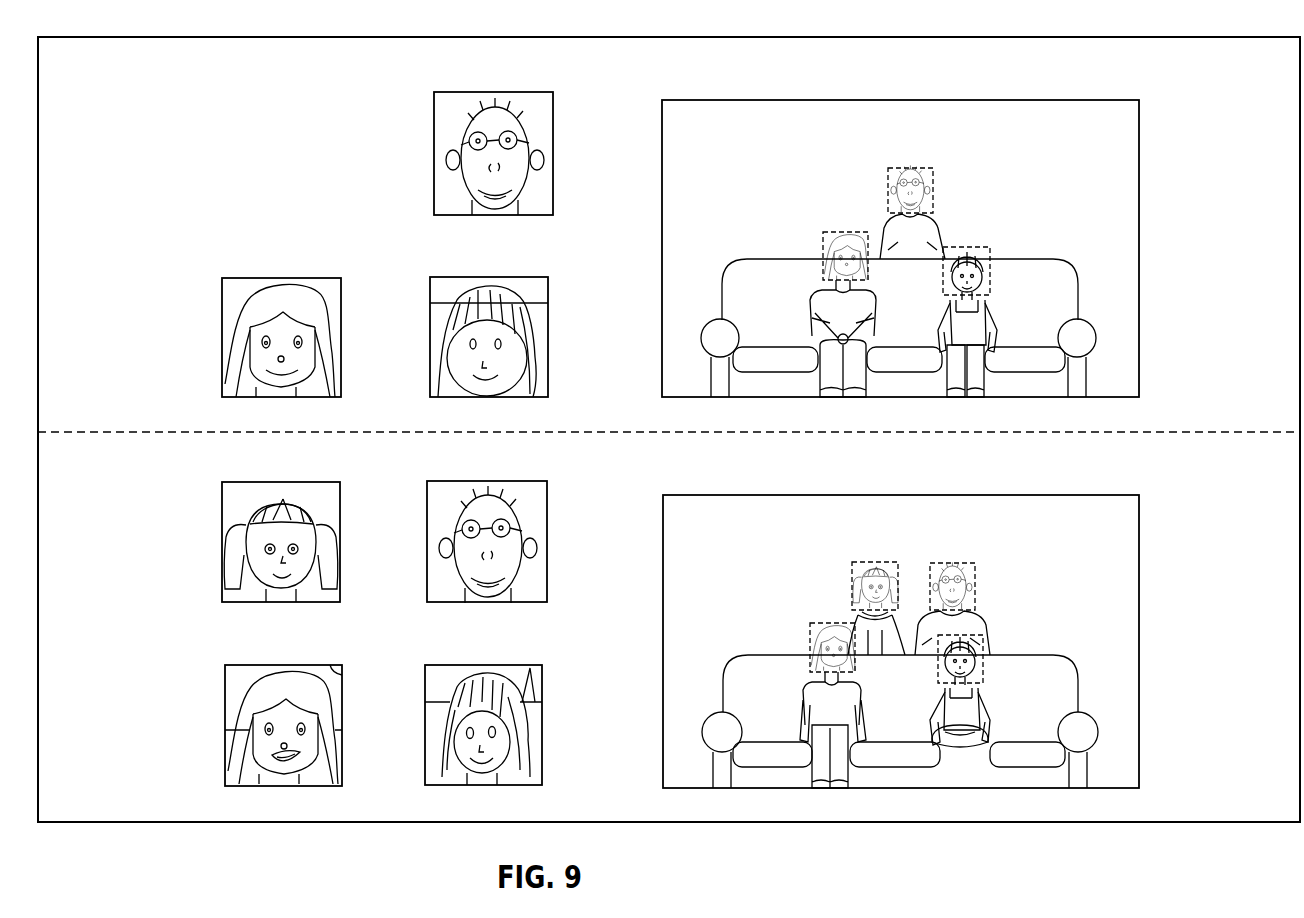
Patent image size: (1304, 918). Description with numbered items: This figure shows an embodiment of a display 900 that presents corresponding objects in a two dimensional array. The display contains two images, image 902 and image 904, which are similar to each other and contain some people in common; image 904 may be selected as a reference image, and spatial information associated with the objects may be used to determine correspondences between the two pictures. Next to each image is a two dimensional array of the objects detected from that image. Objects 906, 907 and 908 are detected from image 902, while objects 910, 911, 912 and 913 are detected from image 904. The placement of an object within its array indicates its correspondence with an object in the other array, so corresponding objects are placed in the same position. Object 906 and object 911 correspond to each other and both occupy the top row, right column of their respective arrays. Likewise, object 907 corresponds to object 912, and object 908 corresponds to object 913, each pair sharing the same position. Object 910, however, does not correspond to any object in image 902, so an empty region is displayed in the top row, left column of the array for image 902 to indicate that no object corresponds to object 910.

The display 900 is at (107, 36).
The image 902 is at (733, 100).
The image 904 is at (733, 495).
The object 906 is at (503, 92).
The object 907 is at (292, 278).
The object 908 is at (503, 277).
The object 910 is at (292, 482).
The object 911 is at (495, 481).
The object 912 is at (295, 665).
The object 913 is at (492, 665).